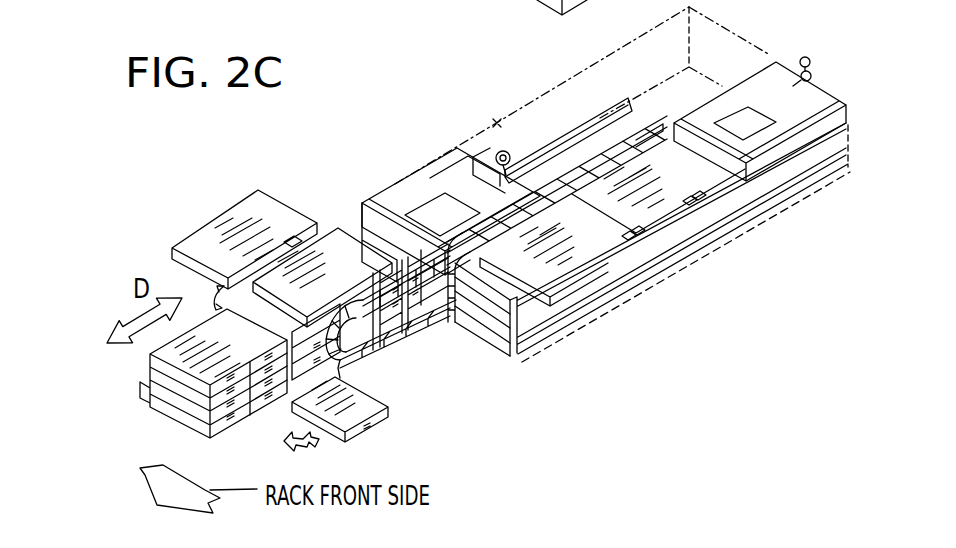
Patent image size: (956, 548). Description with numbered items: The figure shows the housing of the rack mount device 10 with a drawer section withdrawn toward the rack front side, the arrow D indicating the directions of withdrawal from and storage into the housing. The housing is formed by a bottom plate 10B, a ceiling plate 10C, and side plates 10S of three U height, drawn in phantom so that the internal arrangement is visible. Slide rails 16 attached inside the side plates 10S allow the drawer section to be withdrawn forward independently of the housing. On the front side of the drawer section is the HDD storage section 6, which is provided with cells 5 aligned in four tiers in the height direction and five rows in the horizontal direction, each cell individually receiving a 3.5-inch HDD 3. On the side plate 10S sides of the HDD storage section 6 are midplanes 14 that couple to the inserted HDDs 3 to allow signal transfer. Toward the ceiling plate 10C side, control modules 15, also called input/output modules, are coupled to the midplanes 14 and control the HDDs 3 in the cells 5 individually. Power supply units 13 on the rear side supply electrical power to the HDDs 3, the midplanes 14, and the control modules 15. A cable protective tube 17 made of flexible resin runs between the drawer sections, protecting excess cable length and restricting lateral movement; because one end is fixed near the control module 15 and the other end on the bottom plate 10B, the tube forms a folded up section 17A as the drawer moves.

The rack mount device 10 is at (422, 157).
The bottom plate 10B is at (742, 42).
The side plates 10S is at (540, 97).
The ceiling plate 10C is at (490, 115).
The power supply units 13 is at (412, 207).
The midplanes 14 is at (666, 235).
The control modules 15 is at (272, 207).
The slide rails 16 is at (639, 280).
The cable protective tubes 17 is at (397, 328).
The folded up sections 17A is at (338, 358).
The 3.5-inch HDD 3 is at (380, 422).
The cells 5 is at (257, 397).
The HDD storage section 6 is at (178, 417).